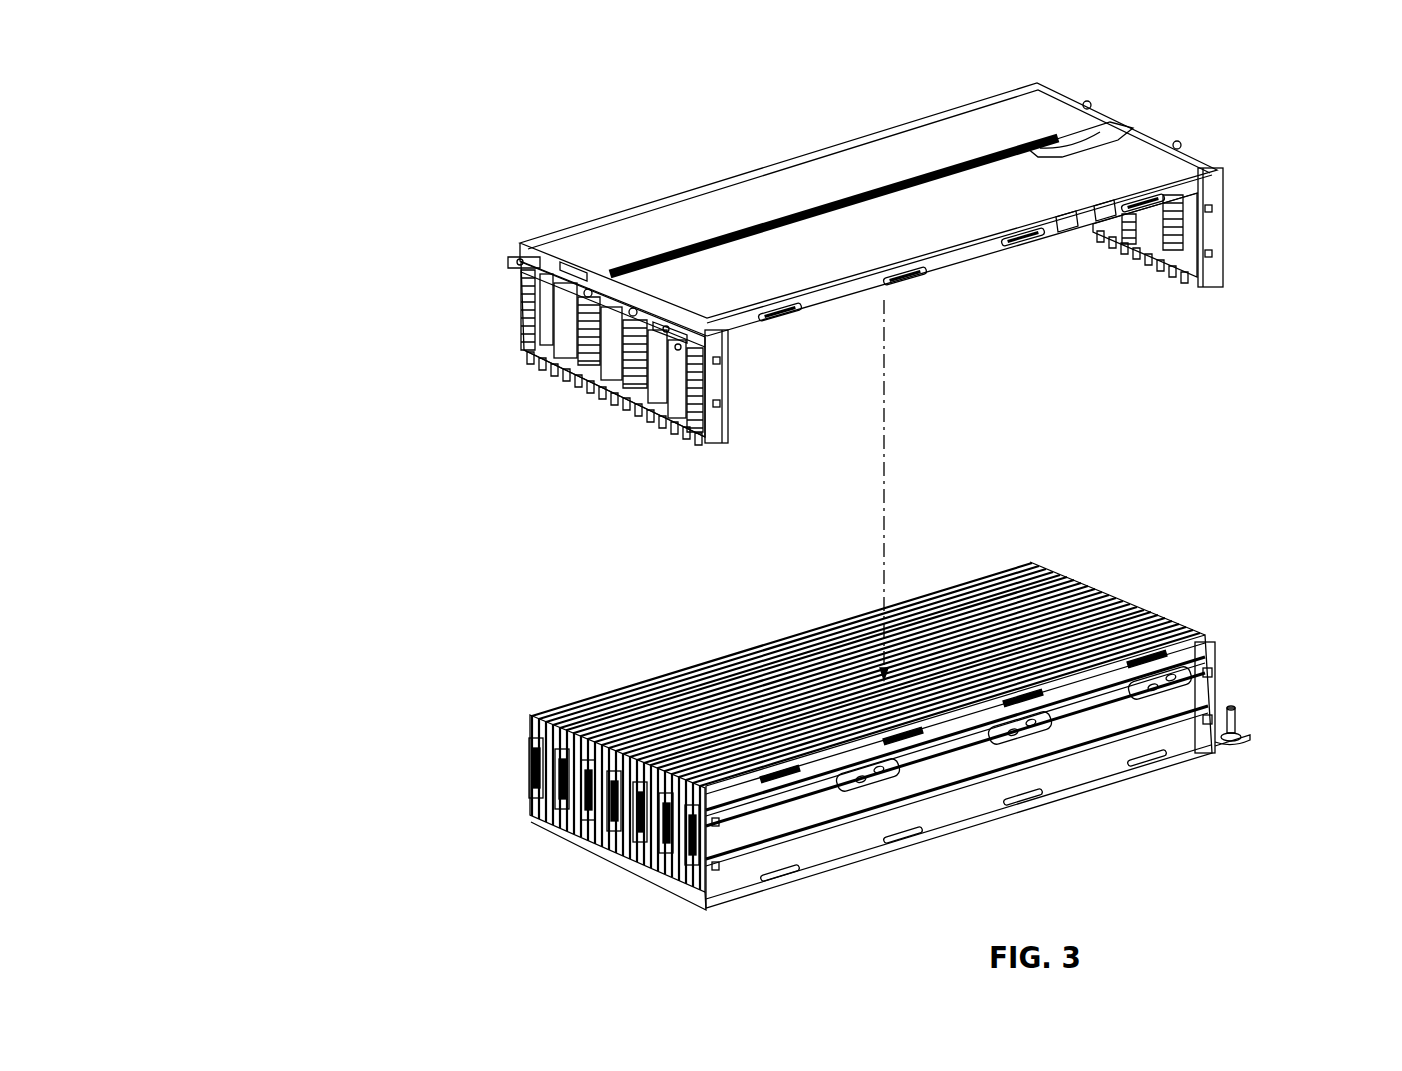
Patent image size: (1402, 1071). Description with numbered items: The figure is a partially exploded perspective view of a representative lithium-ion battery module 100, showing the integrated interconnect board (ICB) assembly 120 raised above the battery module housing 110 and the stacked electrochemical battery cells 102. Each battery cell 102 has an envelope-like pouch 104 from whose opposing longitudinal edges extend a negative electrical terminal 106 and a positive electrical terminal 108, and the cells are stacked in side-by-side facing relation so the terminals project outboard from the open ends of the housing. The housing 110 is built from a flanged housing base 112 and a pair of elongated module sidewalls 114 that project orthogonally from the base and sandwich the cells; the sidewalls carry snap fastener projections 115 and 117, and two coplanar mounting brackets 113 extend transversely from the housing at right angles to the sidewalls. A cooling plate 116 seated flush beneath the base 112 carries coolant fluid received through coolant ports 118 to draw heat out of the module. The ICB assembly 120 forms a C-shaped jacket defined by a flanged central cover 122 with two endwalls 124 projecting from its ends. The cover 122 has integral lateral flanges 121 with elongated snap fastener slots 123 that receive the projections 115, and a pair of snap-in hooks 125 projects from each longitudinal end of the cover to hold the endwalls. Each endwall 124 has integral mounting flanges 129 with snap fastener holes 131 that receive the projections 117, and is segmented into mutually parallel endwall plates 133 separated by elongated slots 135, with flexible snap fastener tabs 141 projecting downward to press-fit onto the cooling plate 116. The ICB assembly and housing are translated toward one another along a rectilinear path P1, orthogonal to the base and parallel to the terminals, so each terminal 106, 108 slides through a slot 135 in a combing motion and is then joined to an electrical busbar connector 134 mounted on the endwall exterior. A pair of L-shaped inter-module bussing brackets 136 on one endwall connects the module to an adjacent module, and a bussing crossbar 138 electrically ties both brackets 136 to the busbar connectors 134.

The battery module 100 is at (292, 105).
The battery cells 102 is at (654, 647).
The pouch 104 is at (640, 735).
The negative electrical terminal 106 is at (538, 782).
The positive electrical terminal 108 is at (548, 815).
The battery module housing 110 is at (1200, 878).
The housing base 112 is at (855, 860).
The mounting brackets 113 is at (1212, 652).
The module sidewalls 114 is at (993, 565).
The snap fastener projections 115 is at (830, 800).
The cooling plate 116 is at (690, 908).
The snap fastener projections 117 is at (725, 885).
The coolant ports 118 is at (1242, 727).
The integrated interconnect board (ICB) assembly 120 is at (634, 142).
The lateral flanges 121 is at (970, 265).
The central cover 122 is at (870, 160).
The snap fastener slots 123 is at (790, 312).
The endwalls 124 is at (1060, 90).
The snap-in hooks 125 is at (565, 265).
The mounting flanges 129 is at (728, 380).
The snap fastener holes 131 is at (725, 403).
The endwall plates 133 is at (540, 372).
The electrical busbar connectors 134 is at (600, 290).
The elongated slots 135 is at (553, 380).
The inter-module bussing brackets 136 is at (522, 320).
The bussing crossbar 138 is at (520, 295).
The snap fastener tabs 141 is at (685, 445).
The rectilinear path P1 is at (890, 440).